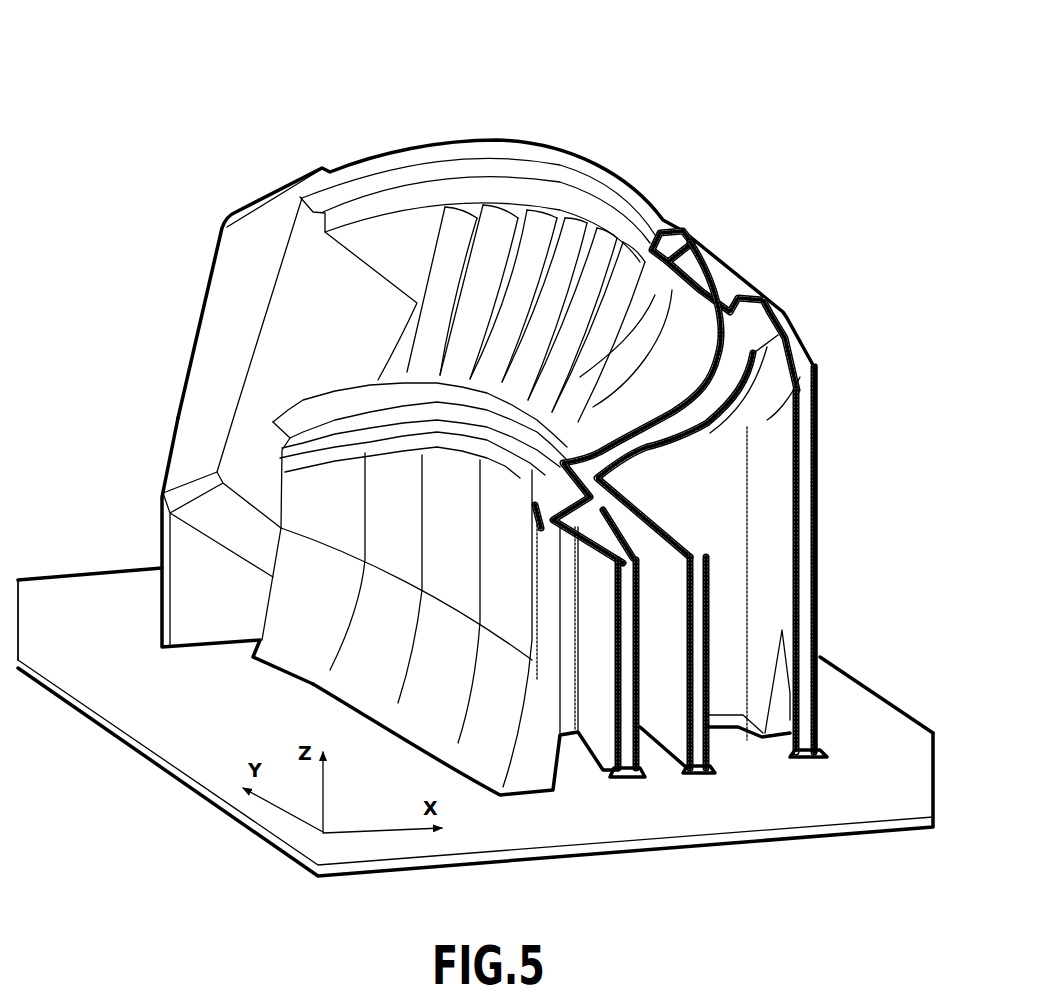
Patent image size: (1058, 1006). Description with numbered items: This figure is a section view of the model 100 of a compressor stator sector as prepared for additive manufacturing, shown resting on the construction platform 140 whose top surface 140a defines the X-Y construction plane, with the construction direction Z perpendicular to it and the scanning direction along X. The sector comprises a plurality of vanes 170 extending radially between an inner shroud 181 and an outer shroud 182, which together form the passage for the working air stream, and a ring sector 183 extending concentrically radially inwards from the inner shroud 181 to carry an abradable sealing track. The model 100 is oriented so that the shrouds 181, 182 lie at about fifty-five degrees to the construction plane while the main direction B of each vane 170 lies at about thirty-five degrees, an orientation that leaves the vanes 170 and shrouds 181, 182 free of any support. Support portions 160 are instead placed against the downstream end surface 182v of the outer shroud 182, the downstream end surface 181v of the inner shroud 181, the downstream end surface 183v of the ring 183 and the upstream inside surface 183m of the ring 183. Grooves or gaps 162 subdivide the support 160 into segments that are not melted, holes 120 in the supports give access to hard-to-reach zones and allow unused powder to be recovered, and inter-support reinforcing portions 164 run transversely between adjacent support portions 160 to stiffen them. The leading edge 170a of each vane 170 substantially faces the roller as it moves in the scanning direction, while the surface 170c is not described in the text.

The model 100 is at (235, 95).
The holes 120 is at (782, 712).
The construction platform 140 is at (287, 853).
The top surface of the construction platform 140a is at (77, 588).
The support portions 160 is at (773, 602).
The grooves or gaps 162 is at (347, 652).
The inter-support reinforcing portions 164 is at (725, 630).
The vanes 170 is at (600, 253).
The leading edge 170a is at (650, 253).
The fin section 170c is at (683, 320).
The inner shroud 181 is at (688, 385).
The downstream end surface of the inner shroud 181v is at (705, 535).
The outer shroud 182 is at (372, 240).
The downstream end surface of the outer shroud 182v is at (815, 367).
The ring sector 183 is at (592, 530).
The downstream end surface of the ring 183v is at (633, 553).
The upstream inside surface 183m is at (545, 530).
The main direction of each vane B is at (750, 300).